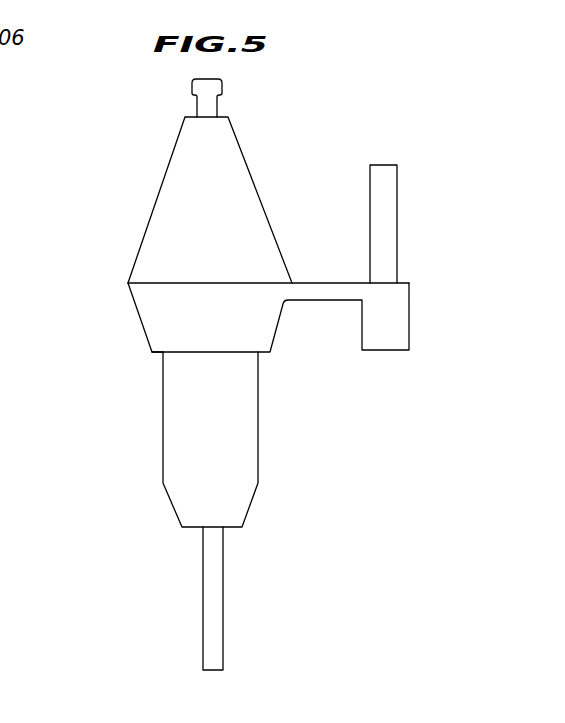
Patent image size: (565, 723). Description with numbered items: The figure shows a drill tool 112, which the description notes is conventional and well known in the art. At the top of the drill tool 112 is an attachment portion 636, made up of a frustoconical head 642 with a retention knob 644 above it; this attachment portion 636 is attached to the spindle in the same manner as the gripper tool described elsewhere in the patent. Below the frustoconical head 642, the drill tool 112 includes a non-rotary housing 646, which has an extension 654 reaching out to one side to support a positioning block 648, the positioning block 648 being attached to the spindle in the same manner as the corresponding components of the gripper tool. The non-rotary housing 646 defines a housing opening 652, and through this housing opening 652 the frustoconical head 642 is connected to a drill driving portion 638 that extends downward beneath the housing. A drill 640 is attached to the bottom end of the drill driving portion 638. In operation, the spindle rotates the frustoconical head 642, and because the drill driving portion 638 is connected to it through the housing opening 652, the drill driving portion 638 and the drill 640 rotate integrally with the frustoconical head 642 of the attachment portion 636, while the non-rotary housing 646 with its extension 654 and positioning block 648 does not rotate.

The drill tool 112 is at (90, 193).
The attachment portion 636 is at (140, 175).
The retention knob 644 is at (212, 90).
The frustoconical head 642 is at (232, 164).
The extension 654 is at (320, 288).
The non-rotary housing 646 is at (175, 322).
The positioning block 648 is at (387, 247).
The housing opening 652 is at (152, 353).
The drill driving portion 638 is at (188, 460).
The drill 640 is at (203, 613).